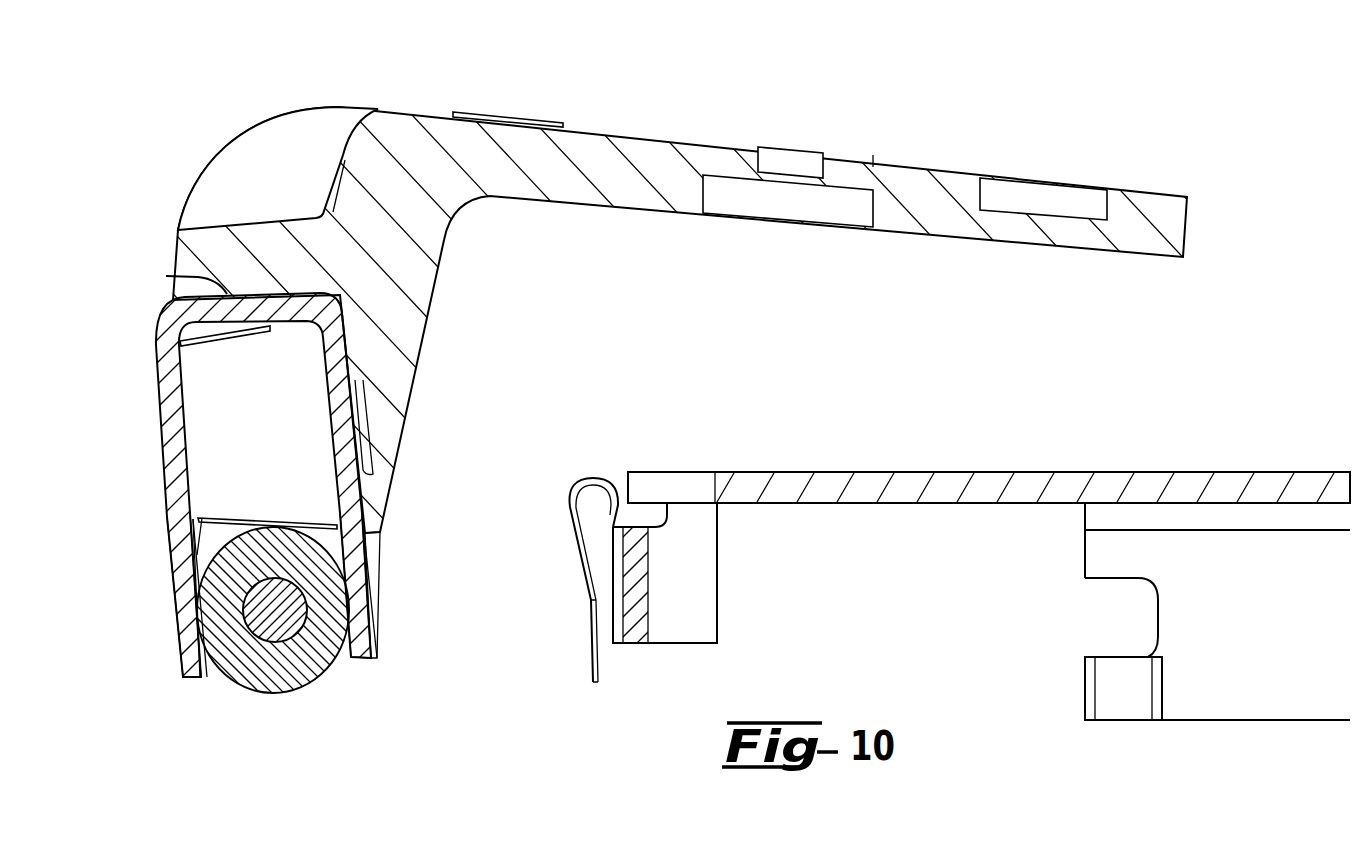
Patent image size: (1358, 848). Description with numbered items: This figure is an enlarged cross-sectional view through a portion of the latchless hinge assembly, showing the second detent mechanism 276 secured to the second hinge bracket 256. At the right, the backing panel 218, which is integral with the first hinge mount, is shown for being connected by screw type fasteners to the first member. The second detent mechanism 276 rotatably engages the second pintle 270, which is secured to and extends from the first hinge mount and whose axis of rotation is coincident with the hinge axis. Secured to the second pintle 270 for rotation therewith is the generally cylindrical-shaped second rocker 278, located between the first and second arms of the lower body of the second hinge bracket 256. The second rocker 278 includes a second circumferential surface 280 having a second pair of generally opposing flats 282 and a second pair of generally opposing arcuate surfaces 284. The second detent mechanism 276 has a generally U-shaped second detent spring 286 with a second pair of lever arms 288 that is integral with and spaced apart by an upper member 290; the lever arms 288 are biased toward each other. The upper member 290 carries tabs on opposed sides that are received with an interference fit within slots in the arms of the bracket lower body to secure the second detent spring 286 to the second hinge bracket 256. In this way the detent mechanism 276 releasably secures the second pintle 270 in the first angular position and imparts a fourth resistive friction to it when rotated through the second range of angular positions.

The backing panel 218 is at (910, 470).
The second hinge bracket 256 is at (430, 92).
The second pintle 270 is at (302, 665).
The second detent mechanism 276 is at (123, 397).
The second rocker 278 is at (261, 673).
The second circumferential surface 280 is at (335, 673).
The second pair of generally opposing flats 282 is at (193, 613).
The second pair of generally opposing arcuate surfaces 284 is at (350, 508).
The second detent spring 286 is at (162, 450).
The second pair of lever arms 288 is at (170, 553).
The upper member 290 is at (167, 278).